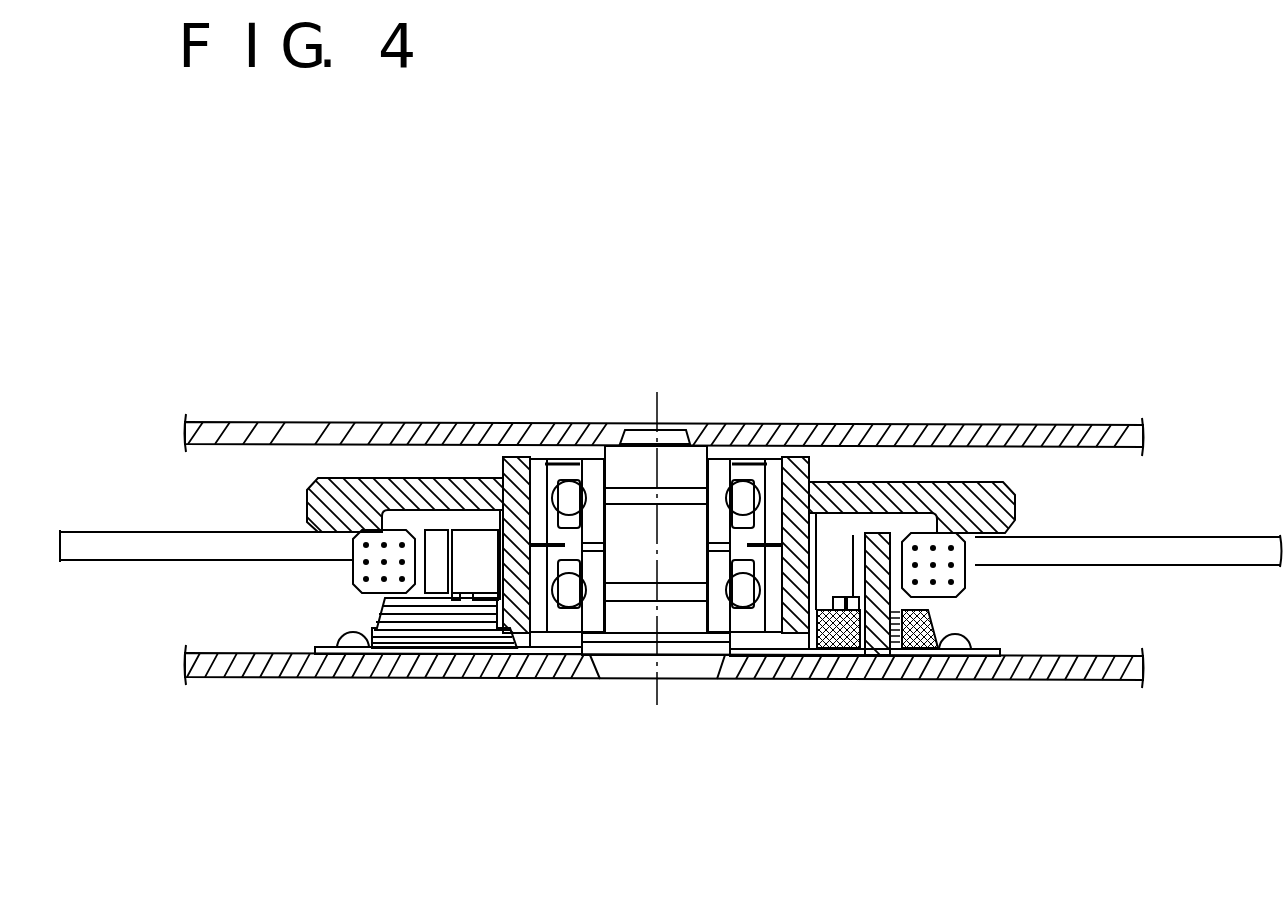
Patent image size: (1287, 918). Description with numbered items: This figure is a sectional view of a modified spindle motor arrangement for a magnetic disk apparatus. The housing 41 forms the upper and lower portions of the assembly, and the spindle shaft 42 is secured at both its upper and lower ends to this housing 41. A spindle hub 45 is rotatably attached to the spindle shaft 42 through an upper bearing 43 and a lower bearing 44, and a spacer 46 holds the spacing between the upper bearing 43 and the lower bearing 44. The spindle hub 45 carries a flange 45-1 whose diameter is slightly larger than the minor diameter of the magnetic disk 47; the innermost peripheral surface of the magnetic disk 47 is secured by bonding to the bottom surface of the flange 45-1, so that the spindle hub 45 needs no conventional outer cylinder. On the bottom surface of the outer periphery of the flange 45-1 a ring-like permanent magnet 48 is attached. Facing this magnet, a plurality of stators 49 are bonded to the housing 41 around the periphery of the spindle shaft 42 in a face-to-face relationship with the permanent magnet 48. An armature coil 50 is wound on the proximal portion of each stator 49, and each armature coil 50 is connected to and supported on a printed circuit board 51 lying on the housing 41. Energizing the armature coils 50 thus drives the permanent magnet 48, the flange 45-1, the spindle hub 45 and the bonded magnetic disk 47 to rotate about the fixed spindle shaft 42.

The housing 41 is at (1078, 433).
The spindle shaft 42 is at (667, 490).
The upper bearing 43 is at (740, 465).
The lower bearing 44 is at (772, 625).
The spindle hub 45 is at (430, 480).
The flange 45-1 is at (978, 483).
The spacer 46 is at (542, 462).
The magnetic disk 47 is at (1157, 562).
The permanent magnet 48 is at (375, 557).
The stator 49 is at (512, 633).
The armature coil 50 is at (397, 628).
The printed circuit board 51 is at (437, 657).